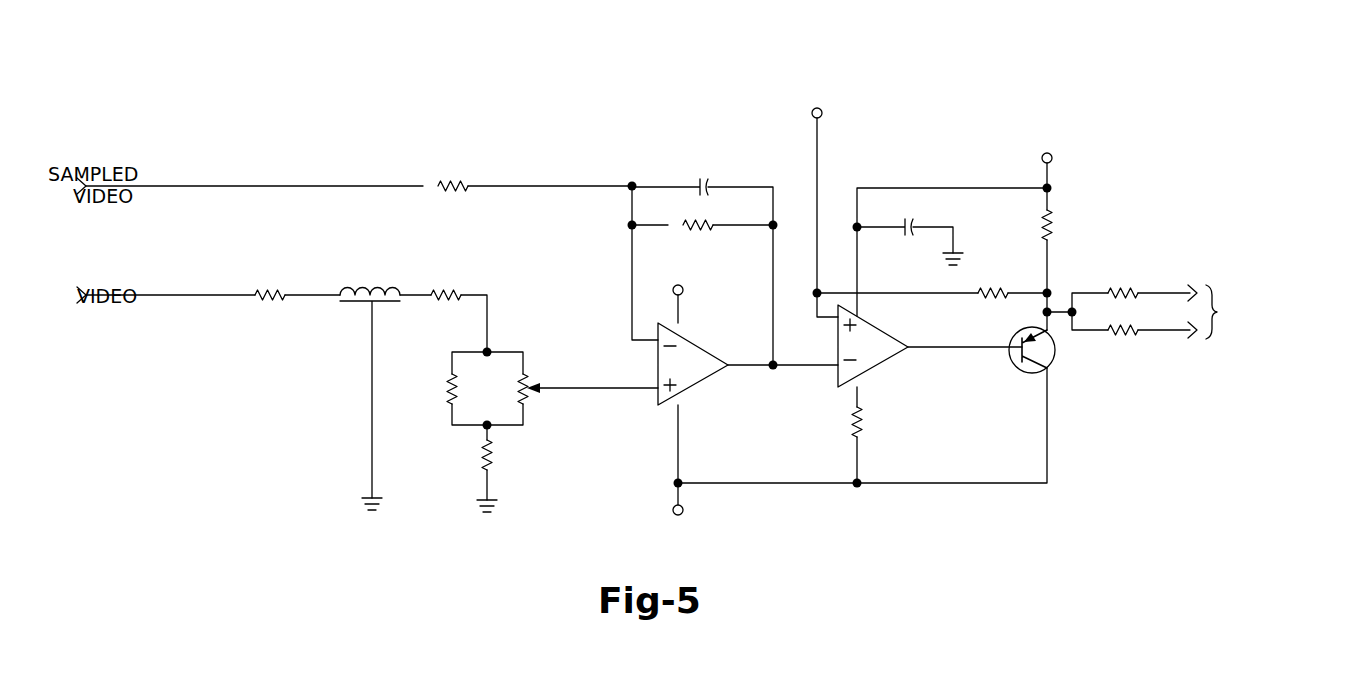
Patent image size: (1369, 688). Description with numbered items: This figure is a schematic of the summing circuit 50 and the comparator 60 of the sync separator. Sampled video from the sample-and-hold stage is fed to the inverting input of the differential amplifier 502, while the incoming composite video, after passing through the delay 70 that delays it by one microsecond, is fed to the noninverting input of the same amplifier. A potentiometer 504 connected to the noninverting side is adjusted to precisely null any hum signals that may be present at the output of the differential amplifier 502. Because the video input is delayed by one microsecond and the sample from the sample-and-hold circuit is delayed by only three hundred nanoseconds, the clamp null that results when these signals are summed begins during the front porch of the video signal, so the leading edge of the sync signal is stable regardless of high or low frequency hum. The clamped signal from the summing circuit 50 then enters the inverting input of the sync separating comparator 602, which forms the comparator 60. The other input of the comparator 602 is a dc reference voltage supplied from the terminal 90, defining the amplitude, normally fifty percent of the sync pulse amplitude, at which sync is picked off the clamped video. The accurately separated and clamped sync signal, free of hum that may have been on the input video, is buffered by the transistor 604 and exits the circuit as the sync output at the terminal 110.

The summing circuit 50 is at (694, 148).
The comparator 60 is at (948, 158).
The delay 70 is at (372, 284).
The terminal 90 is at (816, 106).
The line 110 is at (1176, 257).
The differential amplifier 502 is at (712, 380).
The potentiometer 504 is at (531, 380).
The sync separating comparator 602 is at (890, 362).
The transistor 604 is at (1060, 354).